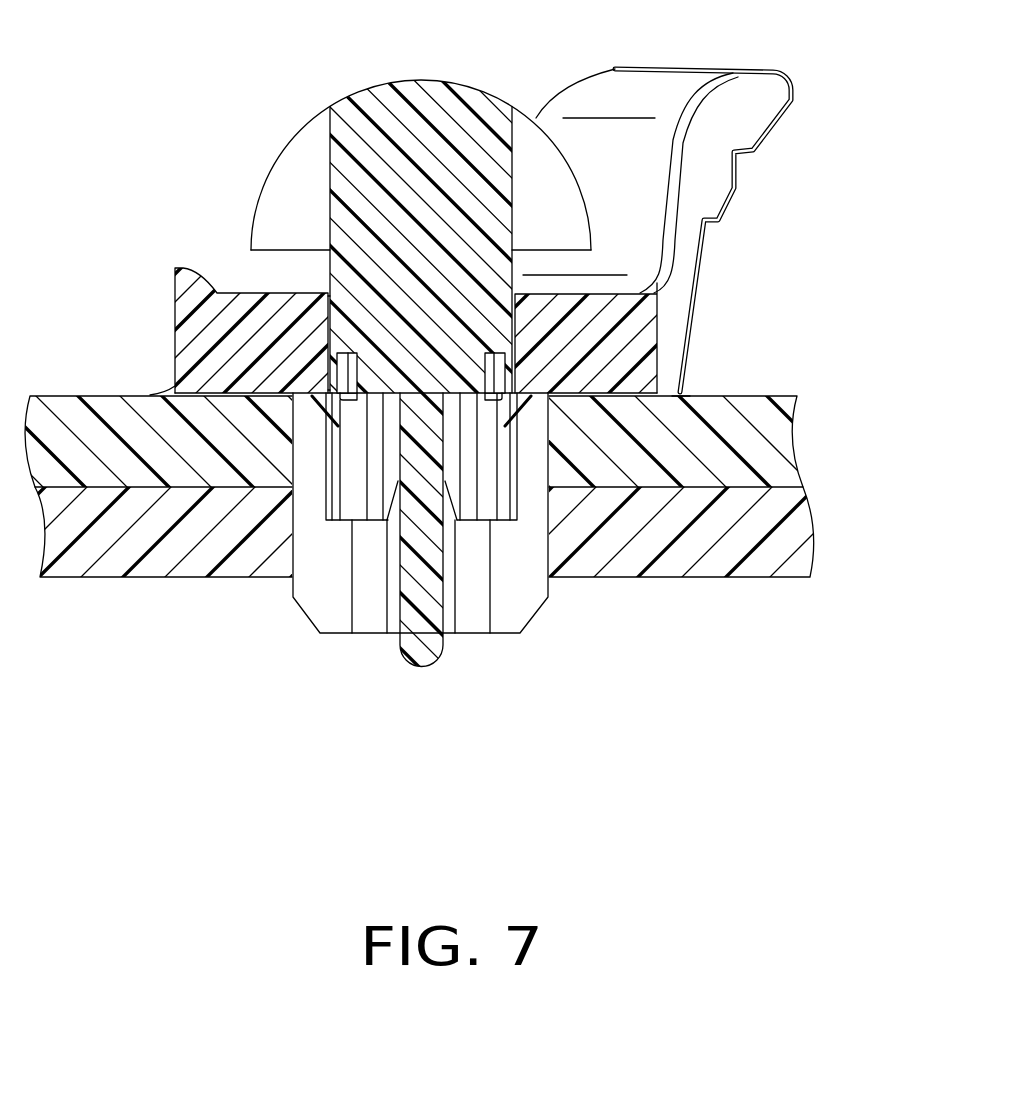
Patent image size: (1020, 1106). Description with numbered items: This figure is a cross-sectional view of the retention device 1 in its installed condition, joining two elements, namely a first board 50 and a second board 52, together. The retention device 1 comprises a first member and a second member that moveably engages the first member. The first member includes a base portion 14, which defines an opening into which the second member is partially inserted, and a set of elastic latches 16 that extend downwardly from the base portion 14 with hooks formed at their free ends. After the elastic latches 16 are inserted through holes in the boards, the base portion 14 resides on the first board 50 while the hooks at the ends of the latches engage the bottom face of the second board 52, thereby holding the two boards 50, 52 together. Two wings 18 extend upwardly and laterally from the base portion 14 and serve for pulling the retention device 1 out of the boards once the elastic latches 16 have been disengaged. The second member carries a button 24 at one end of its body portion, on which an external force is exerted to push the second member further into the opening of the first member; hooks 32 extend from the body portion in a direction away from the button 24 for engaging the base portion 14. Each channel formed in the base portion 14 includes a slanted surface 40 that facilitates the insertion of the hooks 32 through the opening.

The retention device 1 is at (752, 205).
The base portion 14 is at (610, 338).
The elastic latches 16 is at (537, 605).
The wings 18 is at (695, 68).
The button 24 is at (294, 130).
The hooks 32 is at (533, 397).
The slanted surface 40 is at (329, 385).
The first board 50 is at (752, 380).
The second board 52 is at (718, 600).